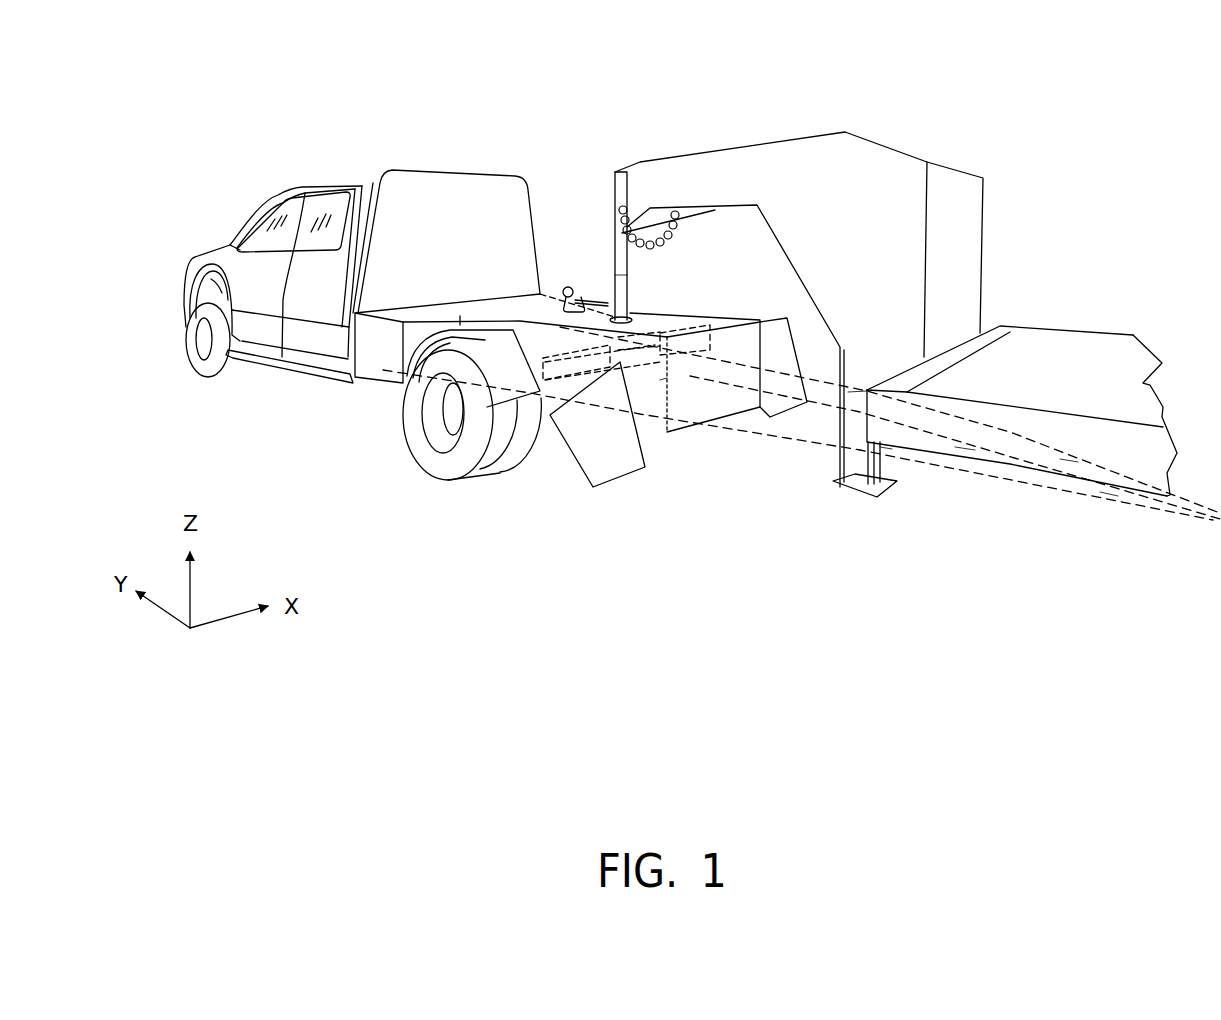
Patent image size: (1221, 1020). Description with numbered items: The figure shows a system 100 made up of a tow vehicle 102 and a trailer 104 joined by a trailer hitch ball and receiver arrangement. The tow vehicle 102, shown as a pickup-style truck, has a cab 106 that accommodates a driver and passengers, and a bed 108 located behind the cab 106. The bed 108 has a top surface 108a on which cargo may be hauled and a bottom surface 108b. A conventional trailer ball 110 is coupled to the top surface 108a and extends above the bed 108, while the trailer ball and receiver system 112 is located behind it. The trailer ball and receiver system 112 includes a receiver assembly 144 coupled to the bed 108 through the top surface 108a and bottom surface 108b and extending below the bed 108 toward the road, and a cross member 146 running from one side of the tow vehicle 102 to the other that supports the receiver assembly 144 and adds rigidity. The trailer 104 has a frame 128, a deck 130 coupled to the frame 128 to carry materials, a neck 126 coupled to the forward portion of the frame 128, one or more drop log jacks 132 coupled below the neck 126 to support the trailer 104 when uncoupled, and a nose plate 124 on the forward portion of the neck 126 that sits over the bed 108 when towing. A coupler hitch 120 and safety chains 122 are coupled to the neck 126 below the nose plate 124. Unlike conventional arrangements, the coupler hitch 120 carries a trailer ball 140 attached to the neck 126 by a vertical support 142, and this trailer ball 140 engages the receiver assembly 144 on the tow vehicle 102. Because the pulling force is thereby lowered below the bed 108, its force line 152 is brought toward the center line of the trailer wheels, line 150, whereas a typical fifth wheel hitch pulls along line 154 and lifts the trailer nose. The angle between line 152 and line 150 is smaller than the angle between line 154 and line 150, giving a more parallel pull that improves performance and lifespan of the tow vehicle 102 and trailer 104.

The system 100 is at (172, 106).
The tow vehicle 102 is at (490, 150).
The trailer 104 is at (1108, 162).
The cab 106 is at (346, 188).
The bed 108 is at (680, 316).
The top surface 108a is at (497, 300).
The bottom surface 108b is at (736, 360).
The trailer ball 110 is at (565, 290).
The trailer ball and receiver system 112 is at (631, 376).
The coupler hitch 120 is at (593, 177).
The safety chains 122 is at (652, 245).
The nose plate 124 is at (629, 176).
The neck 126 is at (762, 150).
The frame 128 is at (1123, 407).
The deck 130 is at (1032, 352).
The drop log jacks 132 is at (852, 480).
The trailer ball 140 is at (646, 351).
The vertical support 142 is at (618, 278).
The receiver assembly 144 is at (602, 340).
The cross member 146 is at (708, 324).
The line 150 is at (1108, 496).
The line 152 is at (967, 450).
The line 154 is at (1068, 462).